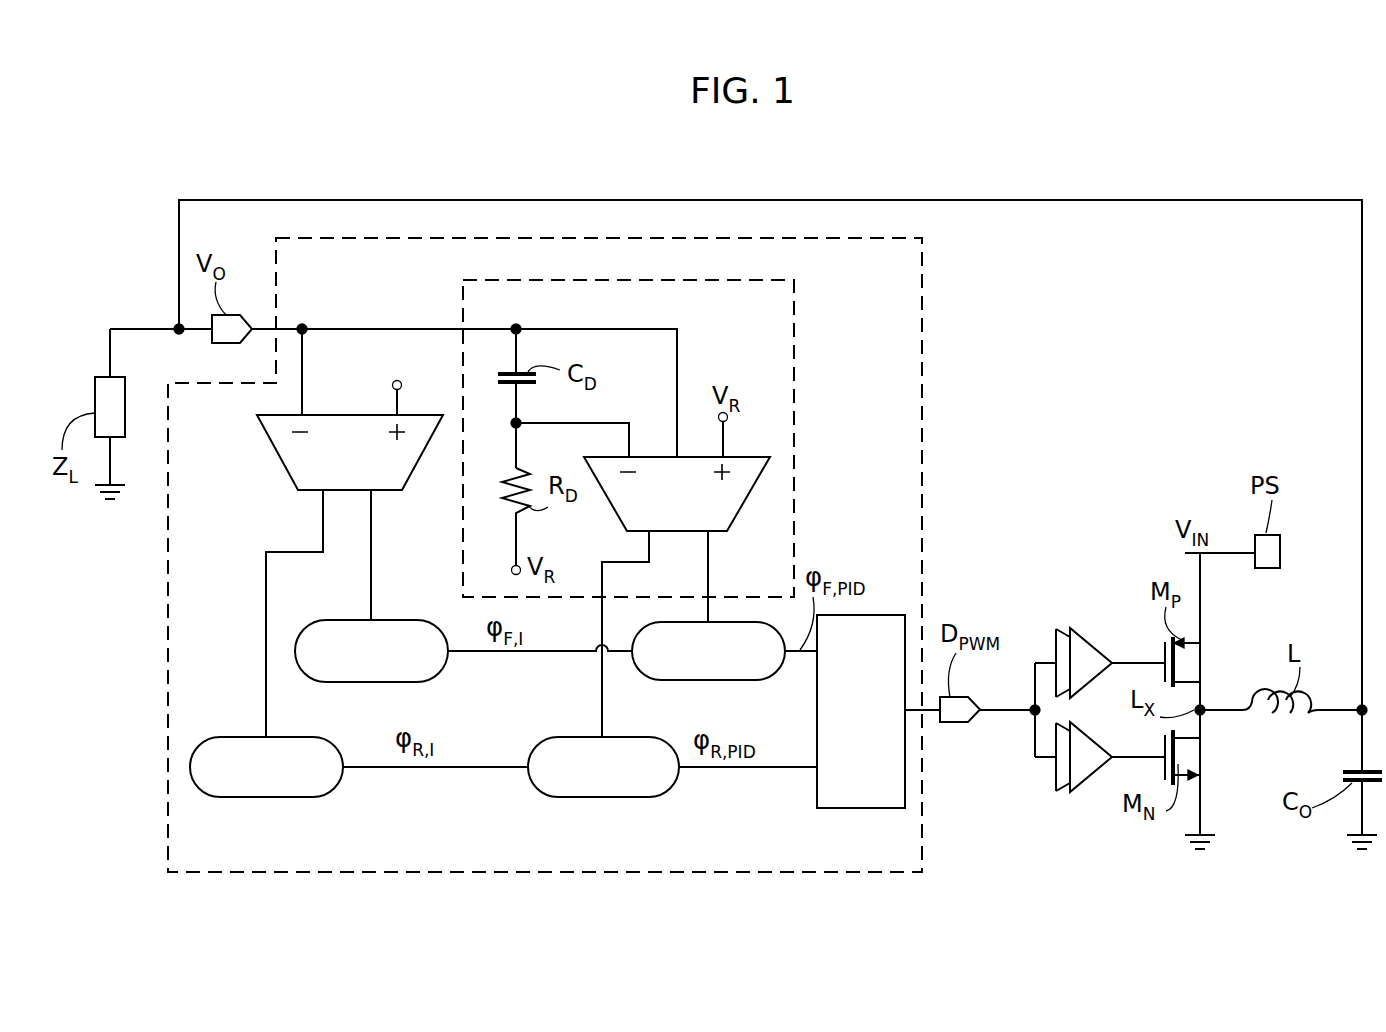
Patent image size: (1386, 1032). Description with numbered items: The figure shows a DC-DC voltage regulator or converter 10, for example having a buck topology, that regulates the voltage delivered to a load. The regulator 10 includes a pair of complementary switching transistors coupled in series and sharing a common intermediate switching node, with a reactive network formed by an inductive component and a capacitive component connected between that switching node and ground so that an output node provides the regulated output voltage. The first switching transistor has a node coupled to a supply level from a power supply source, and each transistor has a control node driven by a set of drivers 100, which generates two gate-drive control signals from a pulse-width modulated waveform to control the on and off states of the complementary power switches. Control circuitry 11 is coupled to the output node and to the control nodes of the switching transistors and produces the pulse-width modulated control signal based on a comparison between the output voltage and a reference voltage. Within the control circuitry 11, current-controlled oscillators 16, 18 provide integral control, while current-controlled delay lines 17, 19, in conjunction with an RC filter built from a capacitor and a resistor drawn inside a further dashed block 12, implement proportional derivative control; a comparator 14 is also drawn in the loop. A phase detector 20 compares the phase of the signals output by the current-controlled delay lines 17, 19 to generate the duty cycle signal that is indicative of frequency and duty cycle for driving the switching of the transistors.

The voltage regulator 10 is at (975, 453).
The control circuitry 11 is at (905, 277).
The derivative path circuit 12 is at (780, 338).
The first comparator 14 is at (298, 473).
The current-controlled oscillator 16 is at (407, 633).
The current-controlled delay line 17 is at (715, 667).
The current-controlled oscillator 18 is at (257, 783).
The current-controlled delay line 19 is at (597, 787).
The phase detector 20 is at (857, 800).
The set of drivers 100 is at (1078, 612).